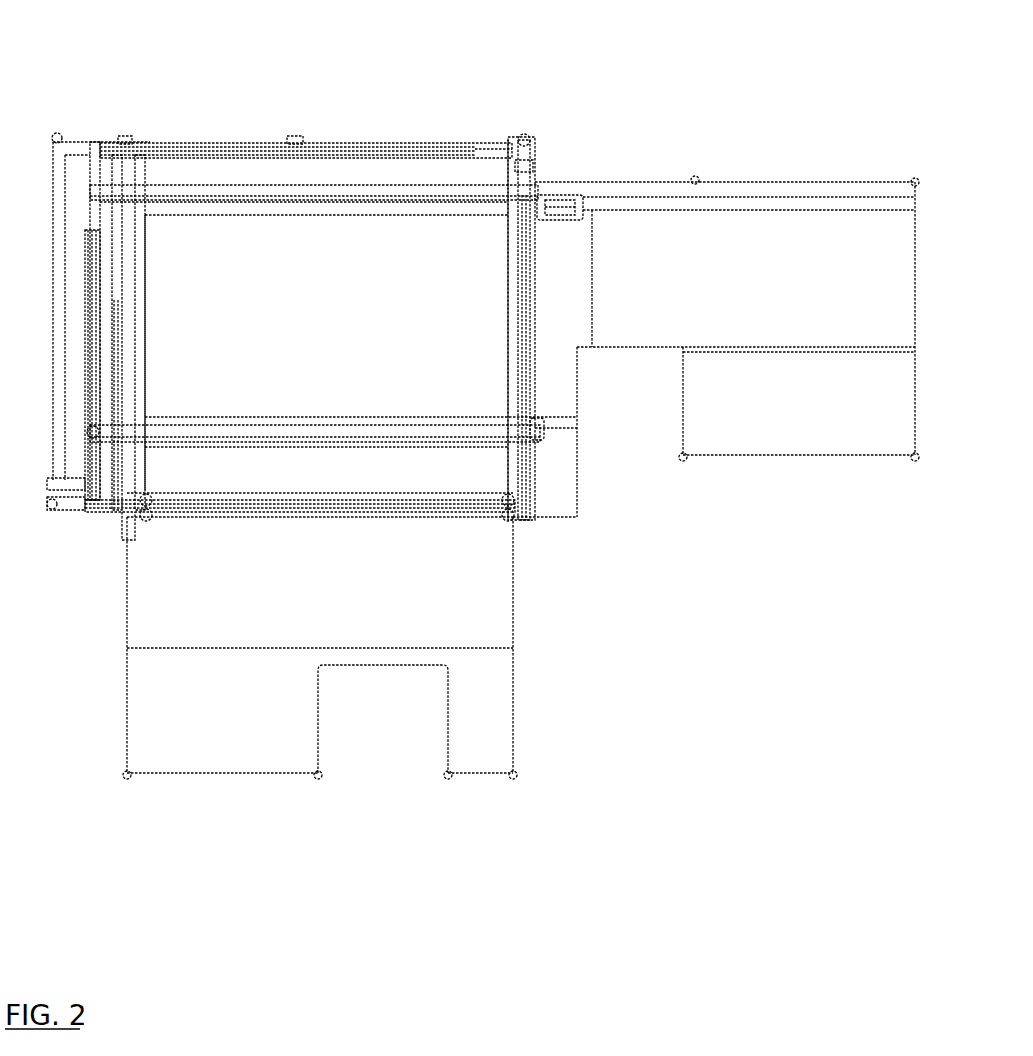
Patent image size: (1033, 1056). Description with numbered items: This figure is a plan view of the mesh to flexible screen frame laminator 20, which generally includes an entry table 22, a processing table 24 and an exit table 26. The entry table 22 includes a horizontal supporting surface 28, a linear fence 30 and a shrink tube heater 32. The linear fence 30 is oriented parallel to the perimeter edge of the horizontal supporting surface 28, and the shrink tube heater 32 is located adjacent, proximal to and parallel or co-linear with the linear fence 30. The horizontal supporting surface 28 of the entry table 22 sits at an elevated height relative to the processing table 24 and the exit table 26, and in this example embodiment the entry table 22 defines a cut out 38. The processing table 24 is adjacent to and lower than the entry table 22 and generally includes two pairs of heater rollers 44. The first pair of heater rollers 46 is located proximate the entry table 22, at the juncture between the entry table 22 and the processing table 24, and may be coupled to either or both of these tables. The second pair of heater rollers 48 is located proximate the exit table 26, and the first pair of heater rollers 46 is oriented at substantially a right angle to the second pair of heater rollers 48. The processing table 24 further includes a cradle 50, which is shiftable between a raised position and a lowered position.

The mesh to flexible screen frame laminator 20 is at (478, 130).
The entry table 22 is at (768, 224).
The processing table 24 is at (245, 232).
The exit table 26 is at (240, 682).
The horizontal supporting surface 28 is at (740, 375).
The linear fence 30 is at (649, 203).
The shrink tube heater 32 is at (557, 205).
The cut out 38 is at (440, 733).
The heater rollers 44 is at (518, 185).
The first pair of heater rollers 46 is at (535, 428).
The second pair of heater rollers 48 is at (137, 515).
The cradle 50 is at (393, 415).